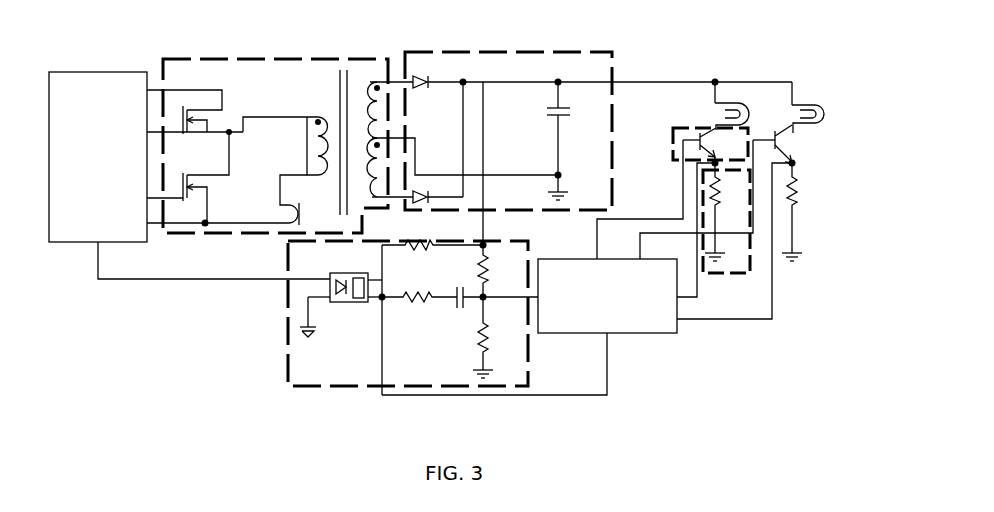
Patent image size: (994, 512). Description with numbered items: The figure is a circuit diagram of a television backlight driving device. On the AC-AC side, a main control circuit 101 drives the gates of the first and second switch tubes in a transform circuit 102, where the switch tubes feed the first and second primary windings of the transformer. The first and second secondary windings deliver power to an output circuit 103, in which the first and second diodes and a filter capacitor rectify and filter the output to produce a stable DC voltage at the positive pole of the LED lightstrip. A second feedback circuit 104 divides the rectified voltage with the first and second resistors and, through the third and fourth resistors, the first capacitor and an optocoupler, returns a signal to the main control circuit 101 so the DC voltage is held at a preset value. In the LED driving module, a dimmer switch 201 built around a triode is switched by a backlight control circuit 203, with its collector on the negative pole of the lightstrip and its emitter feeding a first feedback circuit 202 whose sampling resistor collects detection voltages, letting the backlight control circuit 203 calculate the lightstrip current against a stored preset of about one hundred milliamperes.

The main control circuit 101 is at (85, 72).
The transform circuit 102 is at (262, 59).
The output circuit 103 is at (507, 38).
The second feedback circuit 104 is at (288, 363).
The dimmer switch 201 is at (682, 128).
The first feedback circuit 202 is at (720, 275).
The backlight control circuit 203 is at (617, 333).